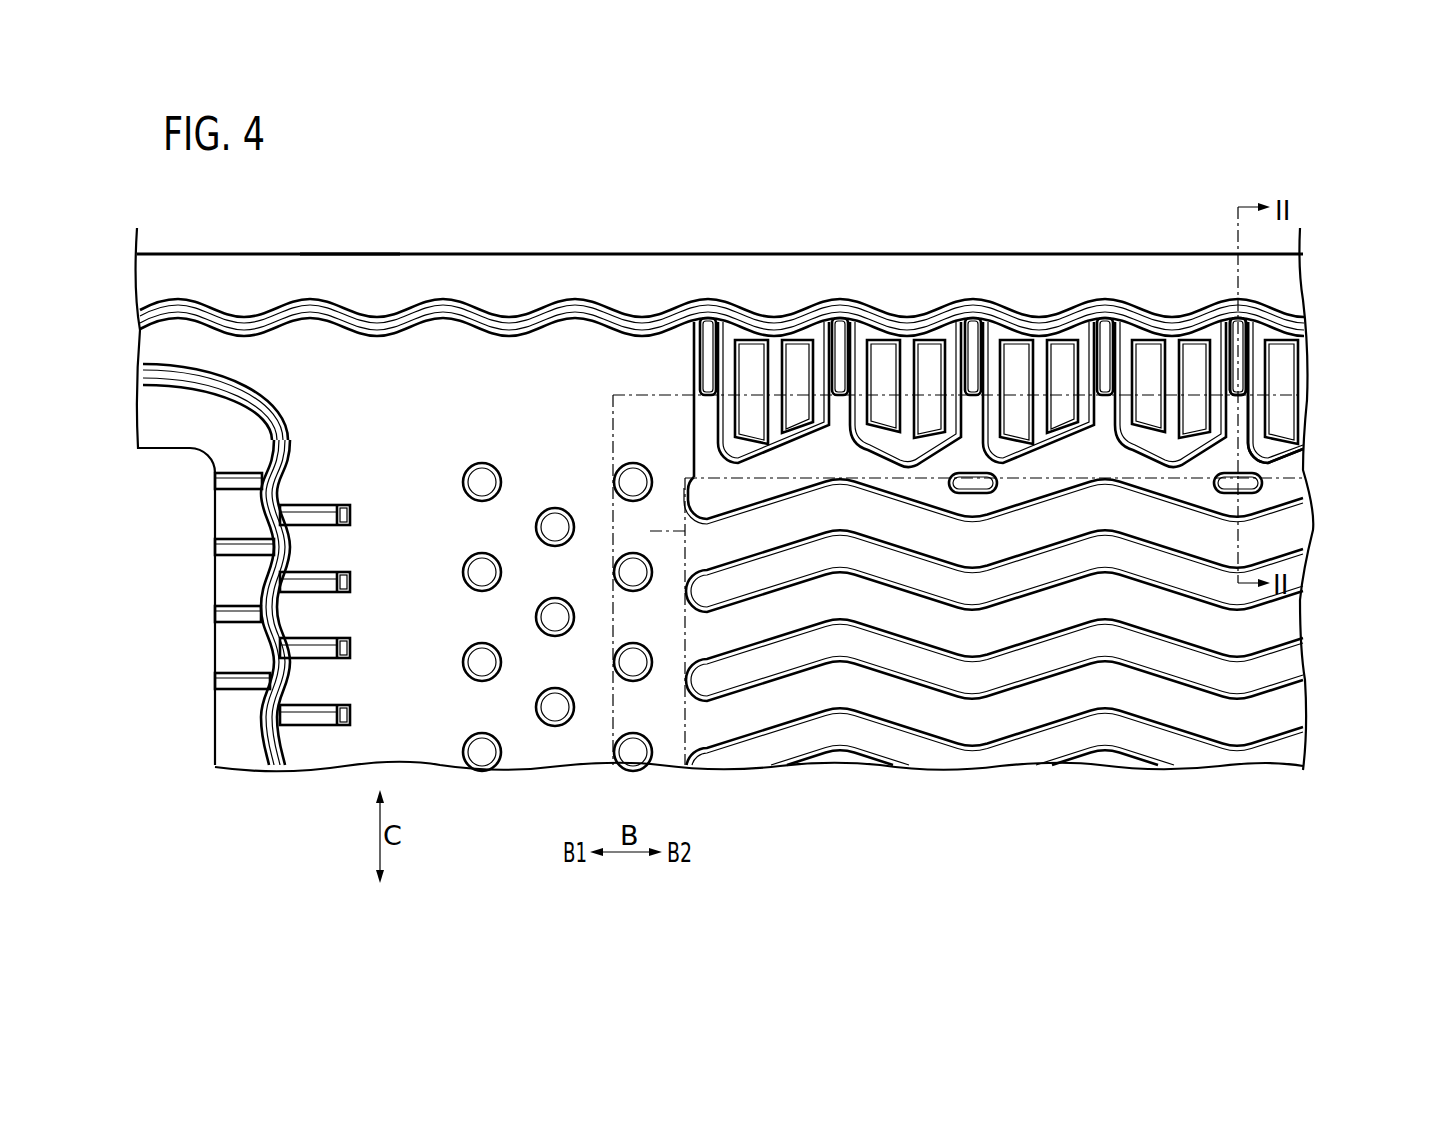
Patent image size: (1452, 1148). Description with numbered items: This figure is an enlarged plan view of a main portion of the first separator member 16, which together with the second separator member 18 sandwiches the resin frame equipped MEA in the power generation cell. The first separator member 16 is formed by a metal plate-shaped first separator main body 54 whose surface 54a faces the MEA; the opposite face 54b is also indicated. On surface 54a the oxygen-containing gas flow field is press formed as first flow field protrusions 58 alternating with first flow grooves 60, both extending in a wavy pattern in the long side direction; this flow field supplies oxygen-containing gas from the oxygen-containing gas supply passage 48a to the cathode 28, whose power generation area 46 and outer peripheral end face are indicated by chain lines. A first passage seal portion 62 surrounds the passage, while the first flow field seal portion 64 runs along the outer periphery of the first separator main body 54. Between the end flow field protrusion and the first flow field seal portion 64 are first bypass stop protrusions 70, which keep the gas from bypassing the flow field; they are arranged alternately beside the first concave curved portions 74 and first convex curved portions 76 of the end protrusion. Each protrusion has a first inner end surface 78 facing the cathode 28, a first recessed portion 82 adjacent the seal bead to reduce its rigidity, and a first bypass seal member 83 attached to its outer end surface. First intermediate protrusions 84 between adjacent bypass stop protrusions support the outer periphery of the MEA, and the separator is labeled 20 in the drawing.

The first separator member 16 is at (503, 243).
The second separator member 18 is at (553, 243).
The separator 20 is at (1249, 162).
The cathode 28 is at (641, 393).
The power generation area 46 is at (650, 531).
The oxygen-containing gas supply passage 48a is at (192, 743).
The first separator main body 54 is at (285, 254).
The surface 54a is at (345, 270).
The second surface 54b is at (407, 270).
The first flow field protrusion 58 is at (1163, 745).
The first flow groove 60 is at (922, 717).
The first passage seal portion 62 is at (277, 411).
The first flow field seal portion 64 is at (677, 313).
The first bypass stop protrusion 70 is at (827, 408).
The first concave curved portion 74 is at (977, 505).
The first convex curved portion 76 is at (842, 455).
The first inner end surface 78 is at (1240, 425).
The first recessed portion 82 is at (1240, 330).
The first bypass seal member 83 is at (1105, 352).
The first intermediate protrusion 84 is at (1053, 367).